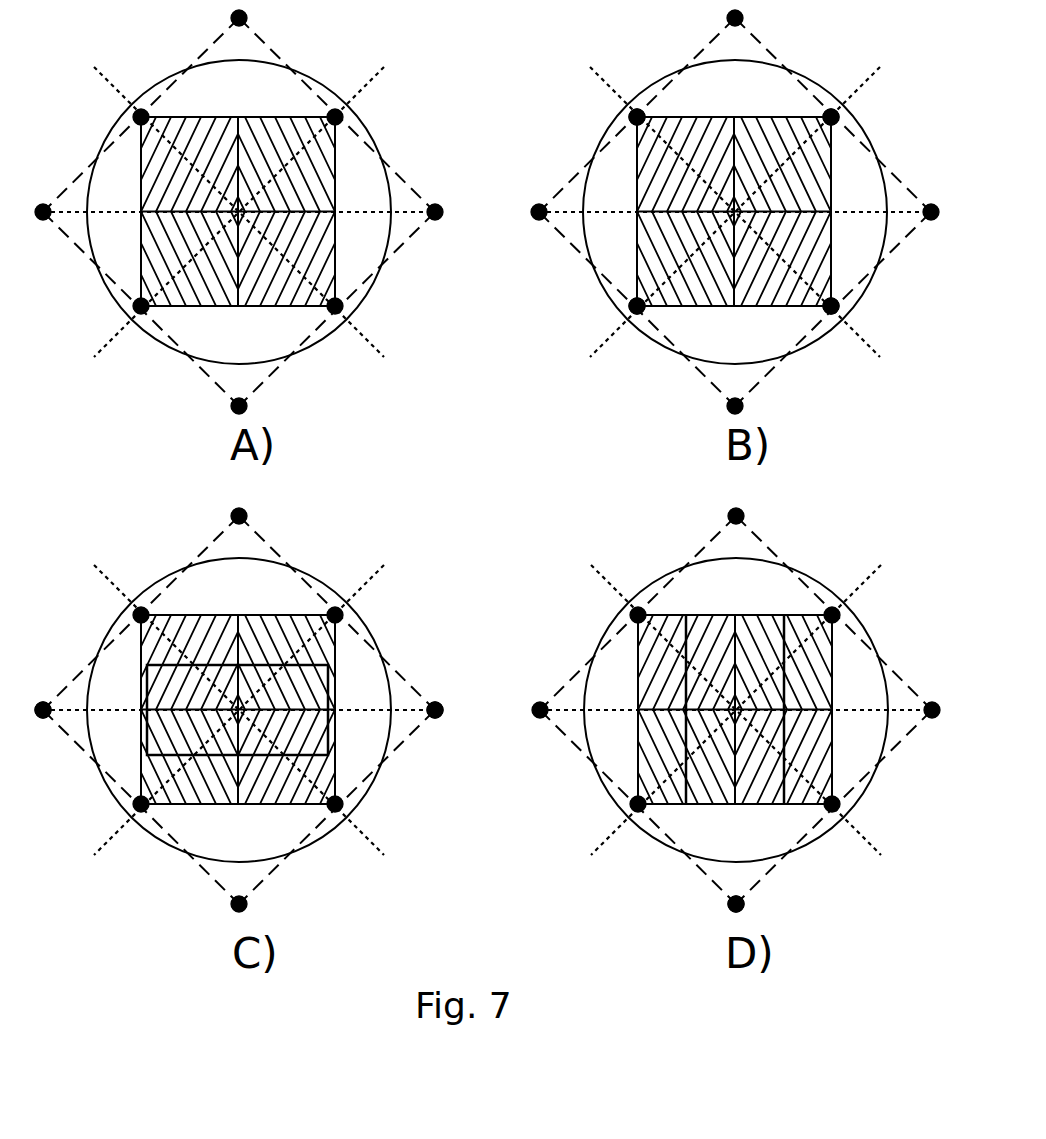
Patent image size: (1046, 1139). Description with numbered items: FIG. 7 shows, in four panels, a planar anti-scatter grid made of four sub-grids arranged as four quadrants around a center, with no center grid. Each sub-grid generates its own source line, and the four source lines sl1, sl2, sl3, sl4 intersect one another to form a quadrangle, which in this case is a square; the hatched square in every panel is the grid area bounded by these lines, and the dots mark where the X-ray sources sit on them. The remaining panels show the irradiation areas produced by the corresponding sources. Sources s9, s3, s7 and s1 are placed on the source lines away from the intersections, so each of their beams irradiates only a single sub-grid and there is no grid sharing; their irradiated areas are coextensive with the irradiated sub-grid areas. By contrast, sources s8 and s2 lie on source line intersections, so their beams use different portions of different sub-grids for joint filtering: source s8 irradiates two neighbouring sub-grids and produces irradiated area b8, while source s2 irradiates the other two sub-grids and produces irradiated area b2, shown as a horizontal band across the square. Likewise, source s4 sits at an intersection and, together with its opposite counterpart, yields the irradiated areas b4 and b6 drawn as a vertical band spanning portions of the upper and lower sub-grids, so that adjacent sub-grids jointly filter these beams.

The source line sl1 is at (585, 461).
The source line sl2 is at (389, 461).
The source line sl3 is at (389, 463).
The source line sl4 is at (585, 463).
The X-ray source s1 is at (860, 316).
The X-ray source s2 is at (436, 692).
The X-ray source s3 is at (858, 106).
The X-ray source s4 is at (736, 886).
The X-ray source s7 is at (607, 319).
The X-ray source s8 is at (37, 692).
The X-ray source s9 is at (613, 108).
The irradiated area b2 is at (170, 710).
The irradiated area b4 is at (735, 644).
The irradiated area b6 is at (735, 774).
The irradiated area b8 is at (305, 710).